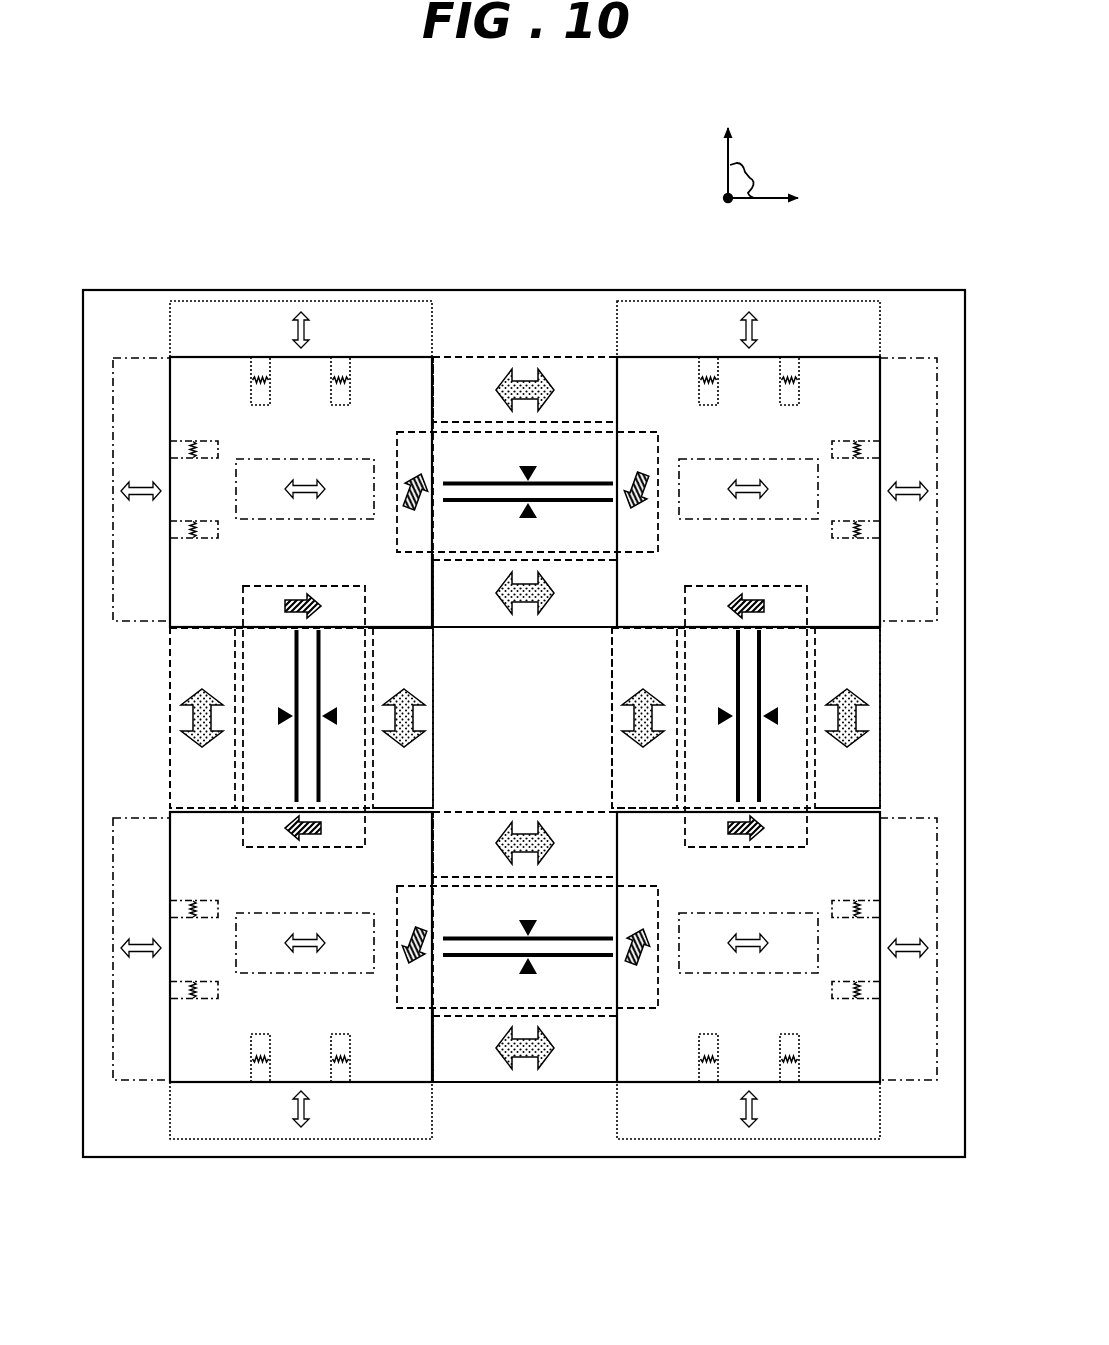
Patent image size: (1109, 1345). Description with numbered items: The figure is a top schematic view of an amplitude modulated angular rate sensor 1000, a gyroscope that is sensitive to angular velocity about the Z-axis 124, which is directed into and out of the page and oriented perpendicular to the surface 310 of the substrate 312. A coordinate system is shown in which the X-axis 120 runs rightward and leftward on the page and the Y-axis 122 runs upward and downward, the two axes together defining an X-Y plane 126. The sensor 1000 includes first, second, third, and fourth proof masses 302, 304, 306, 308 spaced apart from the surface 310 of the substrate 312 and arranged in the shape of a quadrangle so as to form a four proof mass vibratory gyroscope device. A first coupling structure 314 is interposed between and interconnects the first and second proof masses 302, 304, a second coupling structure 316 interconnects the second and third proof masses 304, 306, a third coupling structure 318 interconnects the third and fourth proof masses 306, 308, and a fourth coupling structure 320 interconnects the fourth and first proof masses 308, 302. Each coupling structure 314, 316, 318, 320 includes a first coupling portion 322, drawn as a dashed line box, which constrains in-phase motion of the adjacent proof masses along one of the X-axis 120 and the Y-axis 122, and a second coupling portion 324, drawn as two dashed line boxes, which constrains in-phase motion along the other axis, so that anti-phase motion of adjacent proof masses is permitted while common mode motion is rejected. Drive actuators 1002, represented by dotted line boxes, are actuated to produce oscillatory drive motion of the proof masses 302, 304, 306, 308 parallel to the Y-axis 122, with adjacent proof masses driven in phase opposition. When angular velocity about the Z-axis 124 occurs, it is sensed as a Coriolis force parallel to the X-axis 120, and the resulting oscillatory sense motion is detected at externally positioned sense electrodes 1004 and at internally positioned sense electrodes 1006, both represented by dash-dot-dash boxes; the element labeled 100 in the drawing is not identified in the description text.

The compliant region of block 306 100 is at (690, 973).
The X-axis 120 is at (832, 198).
The Y-axis 122 is at (715, 103).
The Z-axis 124 is at (740, 215).
The X-Y plane 126 is at (768, 163).
The first proof mass 302 is at (311, 447).
The second proof mass 304 is at (768, 447).
The third proof mass 306 is at (768, 904).
The fourth proof mass 308 is at (311, 902).
The surface 310 is at (151, 327).
The substrate 312 is at (237, 290).
The first coupling structure 314 is at (510, 338).
The second coupling structure 316 is at (897, 702).
The third coupling structure 318 is at (525, 1097).
The fourth coupling structure 320 is at (150, 719).
The first coupling portion 322 is at (395, 509).
The second coupling portion 324 is at (566, 556).
The amplitude modulated angular rate sensor 1000 is at (524, 757).
The drive actuators 1002 is at (255, 347).
The externally positioned sense electrodes 1004 is at (157, 427).
The internally positioned sense electrodes 1006 is at (240, 519).